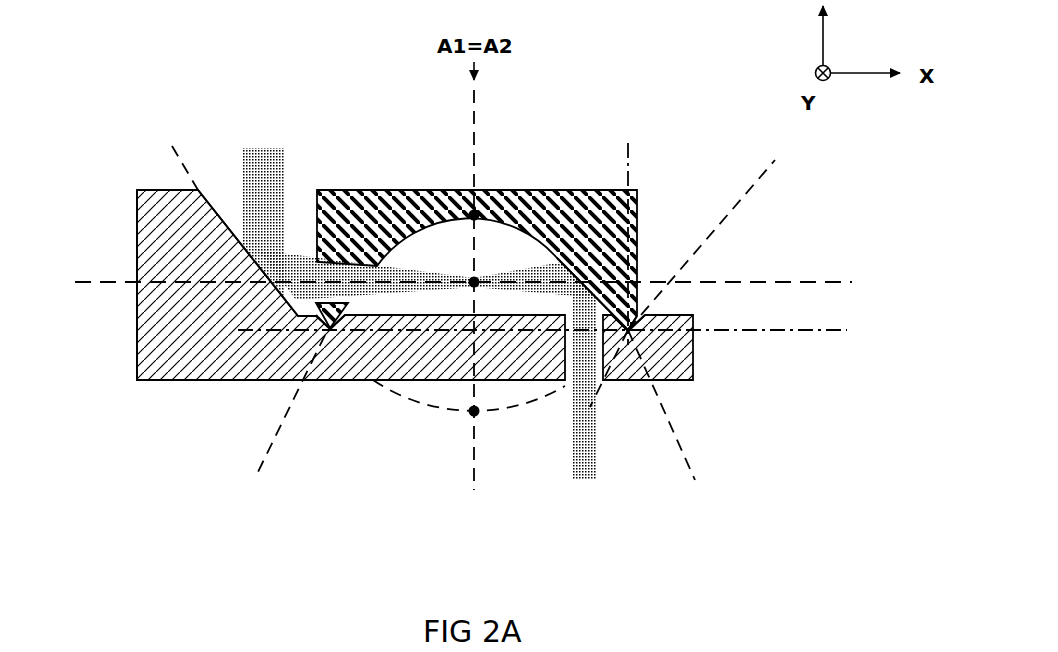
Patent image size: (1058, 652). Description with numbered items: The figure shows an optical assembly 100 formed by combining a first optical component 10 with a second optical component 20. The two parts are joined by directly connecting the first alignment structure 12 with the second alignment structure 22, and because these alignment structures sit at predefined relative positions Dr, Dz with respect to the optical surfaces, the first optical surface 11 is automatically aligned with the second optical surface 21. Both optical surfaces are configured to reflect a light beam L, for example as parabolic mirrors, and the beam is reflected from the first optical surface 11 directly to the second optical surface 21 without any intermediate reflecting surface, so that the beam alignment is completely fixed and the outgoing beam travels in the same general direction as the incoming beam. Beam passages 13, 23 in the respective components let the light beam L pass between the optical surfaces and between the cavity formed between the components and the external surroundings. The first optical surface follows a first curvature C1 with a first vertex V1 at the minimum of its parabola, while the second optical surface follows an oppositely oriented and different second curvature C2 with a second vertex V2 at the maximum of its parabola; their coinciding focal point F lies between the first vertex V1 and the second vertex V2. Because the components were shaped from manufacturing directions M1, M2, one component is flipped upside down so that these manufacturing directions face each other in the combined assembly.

The optical assembly 100 is at (124, 131).
The first optical component 10 is at (157, 257).
The first optical surface 11 is at (266, 280).
The first alignment structure 12 is at (331, 339).
The beam passage 13 is at (354, 292).
The second optical component 20 is at (375, 212).
The second optical surface 21 is at (579, 286).
The second alignment structure 22 is at (627, 338).
The beam passage 23 is at (599, 360).
The light beam L is at (271, 196).
The coinciding focal point F is at (467, 268).
The first vertex V1 is at (492, 423).
The second vertex V2 is at (492, 229).
The first curvature C1 is at (750, 189).
The second curvature C2 is at (685, 455).
The predefined relative position Dr is at (626, 162).
The predefined relative position Dz is at (793, 284).
The first manufacturing direction M1 is at (914, 440).
The second manufacturing direction M2 is at (914, 175).